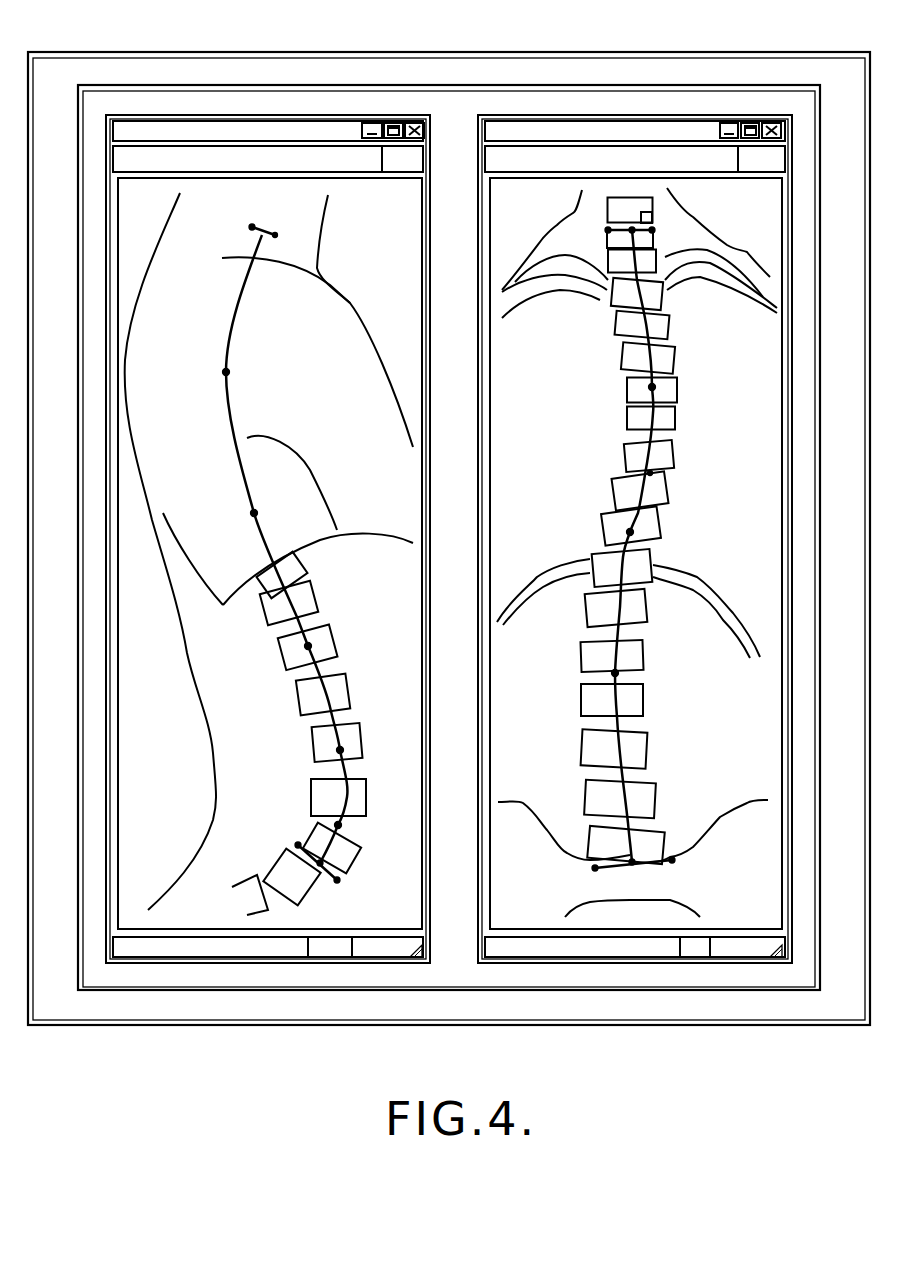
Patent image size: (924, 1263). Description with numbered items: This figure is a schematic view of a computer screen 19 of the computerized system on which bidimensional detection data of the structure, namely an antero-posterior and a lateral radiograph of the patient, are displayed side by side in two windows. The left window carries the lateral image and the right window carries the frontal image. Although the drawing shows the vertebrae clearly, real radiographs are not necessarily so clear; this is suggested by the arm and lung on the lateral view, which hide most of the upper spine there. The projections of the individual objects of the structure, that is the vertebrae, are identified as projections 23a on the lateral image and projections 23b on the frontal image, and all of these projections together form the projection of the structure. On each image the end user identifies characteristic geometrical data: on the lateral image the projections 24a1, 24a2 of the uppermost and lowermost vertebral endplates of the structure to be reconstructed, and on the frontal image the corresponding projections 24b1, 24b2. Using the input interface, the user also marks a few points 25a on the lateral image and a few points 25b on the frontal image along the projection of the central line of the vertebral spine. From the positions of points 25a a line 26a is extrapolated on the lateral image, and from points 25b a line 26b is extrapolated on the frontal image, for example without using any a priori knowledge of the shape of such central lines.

The screen 19 is at (485, 70).
The projection of the uppermost vertebral endplate on the lateral image 24a1 is at (272, 233).
The projection of the lowermost vertebral endplate on the lateral image 24a2 is at (323, 873).
The points of the projection of the central line of the vertebral spine on the later 25a is at (226, 372).
The line extrapolated on the lateral image 26a is at (308, 646).
The projection of an object of the structure on the lateral image 23a is at (303, 697).
The projection of the uppermost vertebral endplate on the frontal image 24b1 is at (646, 214).
The projection of the lowermost vertebral endplate on the frontal image 24b2 is at (663, 861).
The points of the projection of the central line of the vertebral spine on the front 25b is at (652, 387).
The line extrapolated on the frontal image 26b is at (650, 473).
The projection of an object of the structure on the frontal image 23b is at (665, 455).